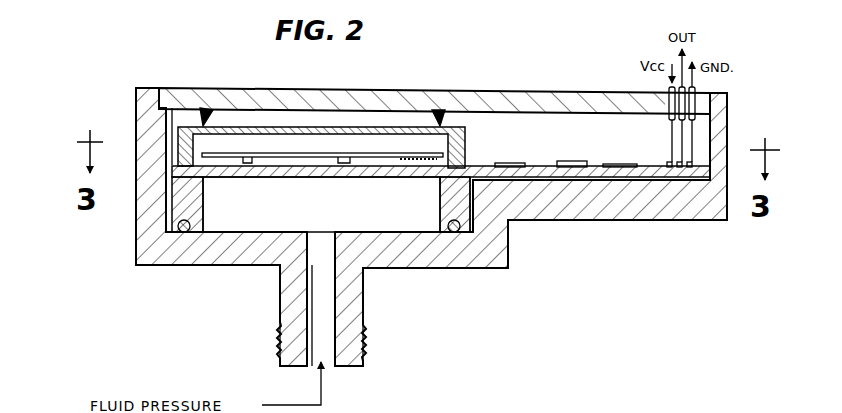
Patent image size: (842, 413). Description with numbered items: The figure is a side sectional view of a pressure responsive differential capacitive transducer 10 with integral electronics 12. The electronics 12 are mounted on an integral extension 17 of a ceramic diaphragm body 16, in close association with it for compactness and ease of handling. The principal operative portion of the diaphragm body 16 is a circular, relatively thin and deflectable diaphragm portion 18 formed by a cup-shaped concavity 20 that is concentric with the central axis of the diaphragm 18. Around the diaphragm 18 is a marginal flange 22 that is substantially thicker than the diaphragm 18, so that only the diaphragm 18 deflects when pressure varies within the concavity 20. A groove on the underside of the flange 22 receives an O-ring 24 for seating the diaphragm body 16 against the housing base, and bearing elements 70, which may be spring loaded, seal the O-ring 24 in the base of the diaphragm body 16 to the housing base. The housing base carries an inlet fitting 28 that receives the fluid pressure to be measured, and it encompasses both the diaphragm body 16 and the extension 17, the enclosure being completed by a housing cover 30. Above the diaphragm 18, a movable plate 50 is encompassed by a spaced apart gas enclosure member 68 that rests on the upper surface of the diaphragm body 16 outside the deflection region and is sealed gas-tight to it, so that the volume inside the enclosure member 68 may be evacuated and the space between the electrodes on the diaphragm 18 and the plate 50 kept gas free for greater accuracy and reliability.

The pressure responsive differential capacitive transducer 10 is at (401, 211).
The integral electronics 12 is at (640, 137).
The diaphragm body 16 is at (164, 219).
The integral extension 17 is at (594, 171).
The diaphragm portion 18 is at (412, 179).
The cup-shaped concavity 20 is at (326, 218).
The marginal flange 22 is at (472, 229).
The O-ring 24 is at (185, 234).
The inlet fitting 28 is at (279, 340).
The housing cover 30 is at (572, 95).
The movable plate 50 is at (331, 155).
The gas enclosure member 68 is at (265, 127).
The bearing elements 70 is at (206, 122).